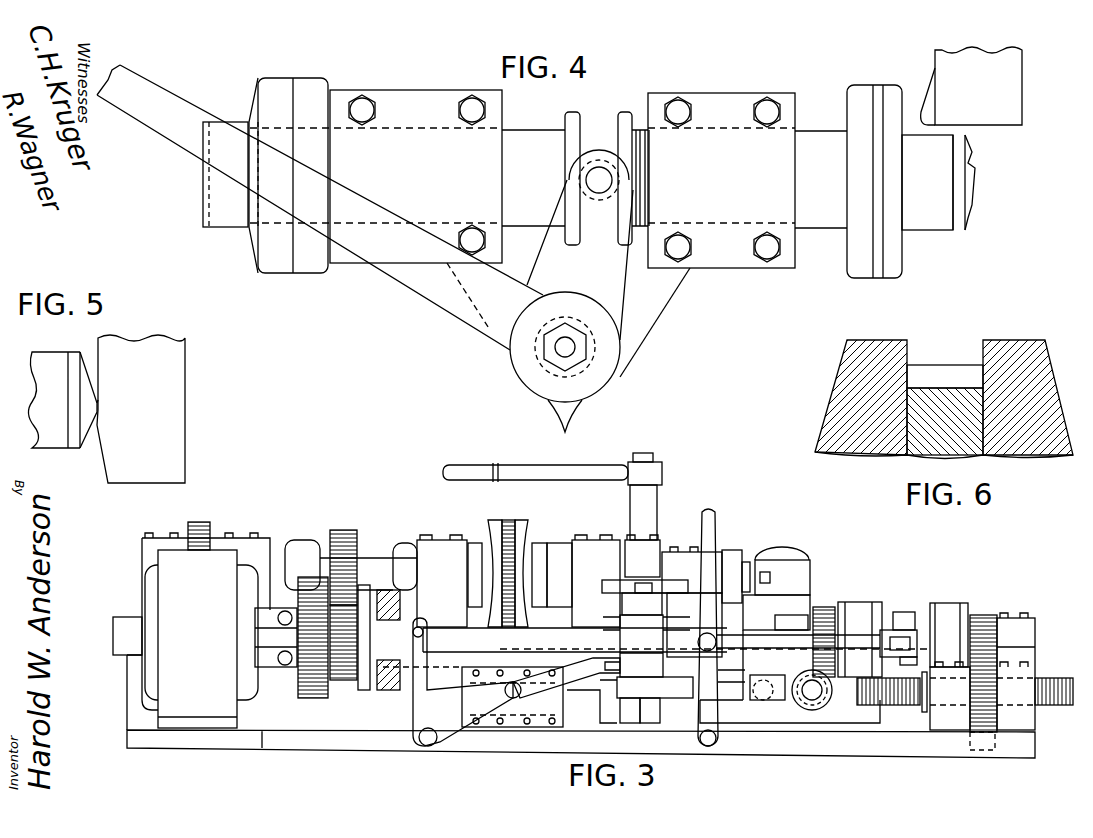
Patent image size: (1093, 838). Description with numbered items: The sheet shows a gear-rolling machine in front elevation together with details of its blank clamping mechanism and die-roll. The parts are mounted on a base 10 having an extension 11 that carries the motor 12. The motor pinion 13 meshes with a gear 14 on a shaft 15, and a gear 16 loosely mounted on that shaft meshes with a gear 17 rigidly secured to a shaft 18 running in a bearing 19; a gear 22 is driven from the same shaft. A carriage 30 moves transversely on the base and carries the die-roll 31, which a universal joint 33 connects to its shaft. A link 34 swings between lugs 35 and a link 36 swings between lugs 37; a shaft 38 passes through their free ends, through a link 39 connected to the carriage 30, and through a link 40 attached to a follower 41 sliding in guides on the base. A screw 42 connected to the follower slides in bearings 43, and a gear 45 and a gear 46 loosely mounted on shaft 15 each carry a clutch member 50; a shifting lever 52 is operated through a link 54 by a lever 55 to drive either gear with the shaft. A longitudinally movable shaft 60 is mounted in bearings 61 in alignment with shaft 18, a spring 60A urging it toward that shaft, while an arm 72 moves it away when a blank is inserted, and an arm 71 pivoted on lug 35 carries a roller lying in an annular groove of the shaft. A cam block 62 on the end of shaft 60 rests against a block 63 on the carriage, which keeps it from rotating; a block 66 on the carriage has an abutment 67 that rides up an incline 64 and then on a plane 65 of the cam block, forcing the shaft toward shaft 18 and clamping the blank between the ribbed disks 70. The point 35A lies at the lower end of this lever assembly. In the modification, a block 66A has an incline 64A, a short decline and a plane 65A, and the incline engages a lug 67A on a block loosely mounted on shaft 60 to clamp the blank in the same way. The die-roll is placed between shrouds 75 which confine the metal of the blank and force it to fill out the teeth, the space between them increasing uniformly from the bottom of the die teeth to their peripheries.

In FIG. 3, the base 10 is at (332, 743).
In FIG. 3, the extension 11 is at (178, 740).
In FIG. 3, the motor 12 is at (228, 698).
In FIG. 3, the motor pinion 13 is at (276, 637).
In FIG. 3, the gear 14 is at (318, 697).
In FIG. 3, the shaft 15 is at (442, 640).
In FIG. 3, the gear 16 is at (348, 680).
In FIG. 3, the gear 17 is at (348, 530).
In FIG. 3, the shaft 18 is at (373, 566).
In FIG. 3, the bearing 19 is at (437, 553).
In FIG. 3, the gear 22 is at (200, 522).
In FIG. 3, the carriage 30 is at (473, 657).
In FIG. 6, the die-roll 31 is at (937, 370).
In FIG. 3, the die-roll 31 is at (507, 530).
In FIG. 3, the universal joint 33 is at (300, 542).
In FIG. 3, the link 34 is at (622, 603).
In FIG. 4, the lugs 35 is at (643, 317).
In FIG. 3, the lugs 35 is at (625, 580).
In FIG. 4, the point 35A is at (570, 417).
In FIG. 3, the link 36 is at (628, 723).
In FIG. 3, the lugs 37 is at (600, 690).
In FIG. 3, the shaft 38 is at (650, 723).
In FIG. 3, the link 39 is at (628, 641).
In FIG. 3, the link 40 is at (680, 690).
In FIG. 3, the follower 41 is at (780, 715).
In FIG. 3, the screw 42 is at (835, 695).
In FIG. 3, the bearings 43 is at (938, 720).
In FIG. 3, the gear 45 is at (988, 615).
In FIG. 3, the gear 46 is at (822, 607).
In FIG. 3, the clutch member 50 is at (858, 610).
In FIG. 3, the shifting lever 52 is at (905, 612).
In FIG. 3, the link 54 is at (860, 640).
In FIG. 3, the lever 55 is at (711, 524).
In FIG. 4, the longitudinally movable shaft 60 is at (530, 143).
In FIG. 3, the longitudinally movable shaft 60 is at (661, 556).
In FIG. 4, the spring 60A is at (648, 177).
In FIG. 4, the bearings 61 is at (425, 107).
In FIG. 4, the cam block 62 is at (943, 208).
In FIG. 3, the block 63 is at (760, 605).
In FIG. 4, the incline 64 is at (973, 156).
In FIG. 4, the plane 65 is at (973, 182).
In FIG. 4, the block 66 is at (1000, 108).
In FIG. 4, the abutment 67 is at (925, 112).
In FIG. 5, the incline 64A is at (103, 461).
In FIG. 5, the plane 65A is at (98, 410).
In FIG. 5, the block 66A is at (162, 448).
In FIG. 5, the lug 67A is at (92, 400).
In FIG. 4, the disks 70 is at (220, 218).
In FIG. 4, the arm 71 is at (607, 283).
In FIG. 4, the arm 72 is at (155, 117).
In FIG. 3, the arm 72 is at (463, 473).
In FIG. 6, the shrouds 75 is at (887, 343).